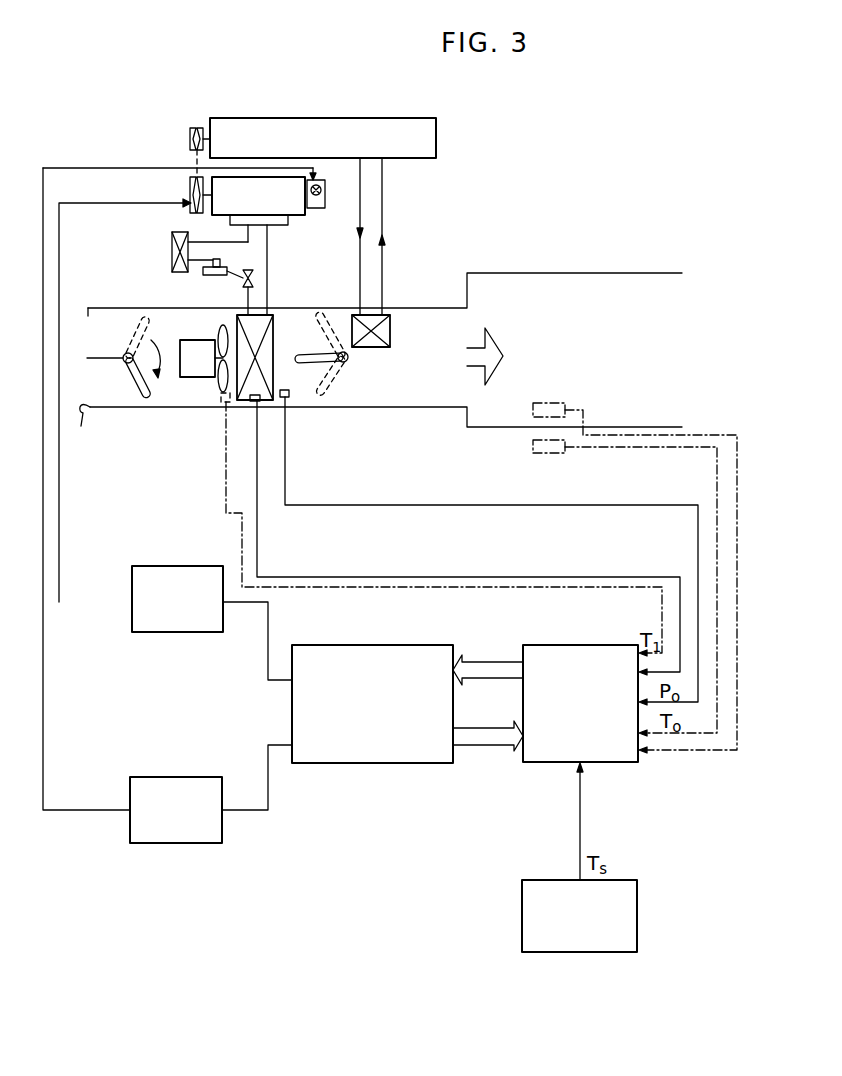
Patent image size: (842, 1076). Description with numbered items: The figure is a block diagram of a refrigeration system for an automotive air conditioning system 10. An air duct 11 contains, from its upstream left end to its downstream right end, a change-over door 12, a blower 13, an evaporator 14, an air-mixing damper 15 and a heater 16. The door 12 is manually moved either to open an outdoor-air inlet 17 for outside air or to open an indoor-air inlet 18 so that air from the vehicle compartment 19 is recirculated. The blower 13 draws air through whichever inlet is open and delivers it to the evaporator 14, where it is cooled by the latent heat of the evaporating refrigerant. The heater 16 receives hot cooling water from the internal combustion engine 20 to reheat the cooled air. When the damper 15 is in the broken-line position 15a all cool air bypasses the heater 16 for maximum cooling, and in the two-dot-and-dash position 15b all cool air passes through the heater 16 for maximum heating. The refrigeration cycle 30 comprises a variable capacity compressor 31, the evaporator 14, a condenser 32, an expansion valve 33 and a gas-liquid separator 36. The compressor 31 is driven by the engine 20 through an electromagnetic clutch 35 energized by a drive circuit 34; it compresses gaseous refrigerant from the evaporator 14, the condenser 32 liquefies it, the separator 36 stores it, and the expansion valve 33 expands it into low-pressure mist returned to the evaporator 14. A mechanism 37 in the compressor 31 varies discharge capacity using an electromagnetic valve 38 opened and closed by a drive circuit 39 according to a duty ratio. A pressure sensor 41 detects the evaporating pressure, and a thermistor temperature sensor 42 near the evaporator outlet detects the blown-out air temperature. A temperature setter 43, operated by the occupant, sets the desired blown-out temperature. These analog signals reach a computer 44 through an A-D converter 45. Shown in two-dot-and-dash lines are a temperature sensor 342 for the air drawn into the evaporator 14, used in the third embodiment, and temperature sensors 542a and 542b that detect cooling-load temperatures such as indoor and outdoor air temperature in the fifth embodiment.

The air conditioning system 10 is at (375, 413).
The air duct 11 is at (113, 308).
The door 12 is at (126, 380).
The blower 13 is at (197, 340).
The evaporator 14 is at (273, 330).
The air-mixing damper 15 is at (350, 358).
The position of air-mixing damper 15a is at (326, 322).
The position of air-mixing damper 15b is at (326, 391).
The heater 16 is at (390, 331).
The outdoor-air inlet 17 is at (88, 328).
The indoor-air inlet 18 is at (80, 431).
The vehicle compartment 19 is at (558, 347).
The internal combustion engine 20 is at (322, 118).
The refrigeration cycle 30 is at (275, 278).
The compressor 31 is at (288, 225).
The condenser 32 is at (172, 246).
The expansion valve 33 is at (245, 282).
The drive circuit 34 is at (180, 566).
The electromagnetic clutch 35 is at (190, 193).
The gas-liquid separator 36 is at (205, 274).
The mechanism for varying discharge capacity 37 is at (322, 208).
The electromagnetic valve 38 is at (322, 190).
The drive circuit 39 is at (176, 777).
The pressure sensor 41 is at (259, 401).
The temperature sensor 42 is at (288, 396).
The temperature setter 43 is at (637, 915).
The computer 44 is at (377, 645).
The A-D converter 45 is at (571, 645).
The temperature sensor 342 is at (220, 397).
The temperature sensor 542a is at (546, 403).
The temperature sensor 542b is at (546, 453).